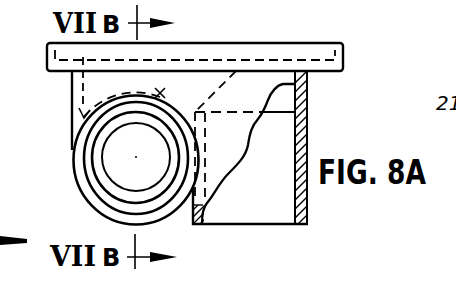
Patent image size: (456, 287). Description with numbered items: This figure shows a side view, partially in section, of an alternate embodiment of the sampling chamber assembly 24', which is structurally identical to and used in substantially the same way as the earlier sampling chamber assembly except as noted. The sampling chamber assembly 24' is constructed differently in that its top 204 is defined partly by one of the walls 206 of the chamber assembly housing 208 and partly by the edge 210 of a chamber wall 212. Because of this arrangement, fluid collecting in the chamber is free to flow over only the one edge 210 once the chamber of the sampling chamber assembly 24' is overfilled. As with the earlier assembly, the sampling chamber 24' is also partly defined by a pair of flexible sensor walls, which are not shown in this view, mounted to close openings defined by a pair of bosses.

The top 204 is at (160, 97).
The wall 206 is at (72, 142).
The chamber assembly housing 208 is at (345, 52).
The edge 210 is at (250, 62).
The sampling chamber assembly 24' is at (352, 151).
The chamber wall 212 is at (203, 218).